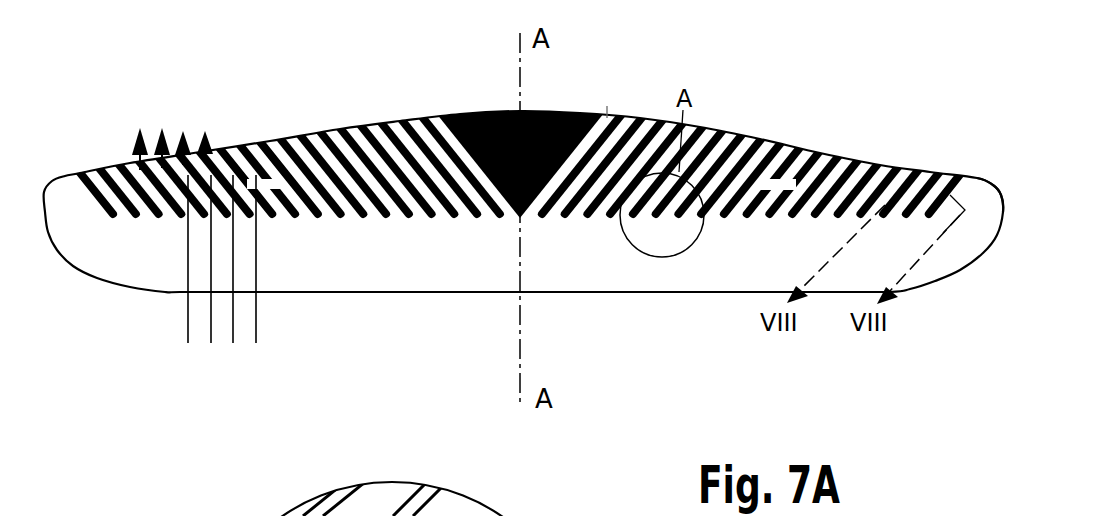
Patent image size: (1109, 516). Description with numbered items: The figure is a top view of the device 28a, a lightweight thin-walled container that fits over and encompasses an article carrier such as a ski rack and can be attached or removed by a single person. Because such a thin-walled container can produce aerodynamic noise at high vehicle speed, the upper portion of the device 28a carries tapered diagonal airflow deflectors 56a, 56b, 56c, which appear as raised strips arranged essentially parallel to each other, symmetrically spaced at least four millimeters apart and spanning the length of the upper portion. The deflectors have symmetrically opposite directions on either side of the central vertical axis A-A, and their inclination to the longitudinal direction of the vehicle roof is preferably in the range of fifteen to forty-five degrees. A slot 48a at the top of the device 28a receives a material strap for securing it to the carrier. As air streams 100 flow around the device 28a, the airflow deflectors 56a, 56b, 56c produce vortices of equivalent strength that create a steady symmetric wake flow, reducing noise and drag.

The device 28a is at (645, 322).
The slot 48a is at (838, 153).
The airflow deflector 56a is at (930, 170).
The airflow deflector 56b is at (953, 172).
The airflow deflector 56c is at (977, 178).
The air streams 100 is at (238, 357).